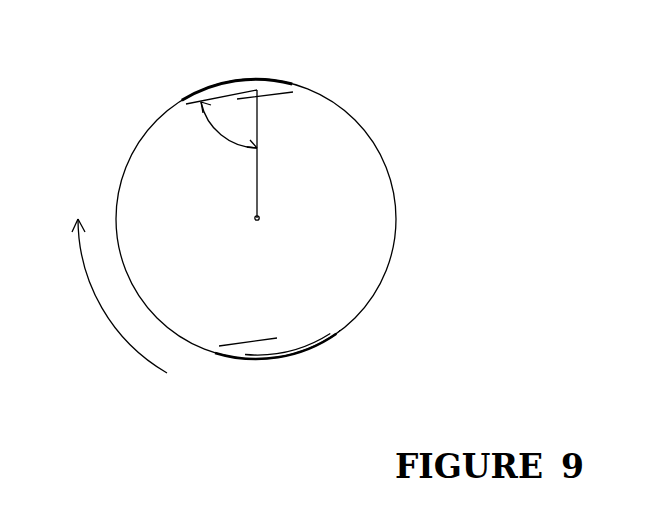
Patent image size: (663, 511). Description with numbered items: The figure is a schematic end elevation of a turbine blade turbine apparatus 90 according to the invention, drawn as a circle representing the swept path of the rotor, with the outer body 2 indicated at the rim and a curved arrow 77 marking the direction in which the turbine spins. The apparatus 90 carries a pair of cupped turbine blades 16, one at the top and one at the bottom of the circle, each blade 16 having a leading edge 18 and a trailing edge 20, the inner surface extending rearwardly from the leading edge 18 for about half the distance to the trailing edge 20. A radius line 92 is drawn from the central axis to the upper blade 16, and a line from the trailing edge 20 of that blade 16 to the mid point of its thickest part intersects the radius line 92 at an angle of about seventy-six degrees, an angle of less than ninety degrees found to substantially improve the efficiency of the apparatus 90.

The drum body 2 is at (138, 142).
The blade 16 is at (268, 82).
The leading edge 18 is at (220, 347).
The trailing edge 20 is at (337, 335).
The direction of rotation 77 is at (98, 302).
The turbine blade turbine apparatus 90 is at (380, 127).
The radius line 92 is at (259, 177).